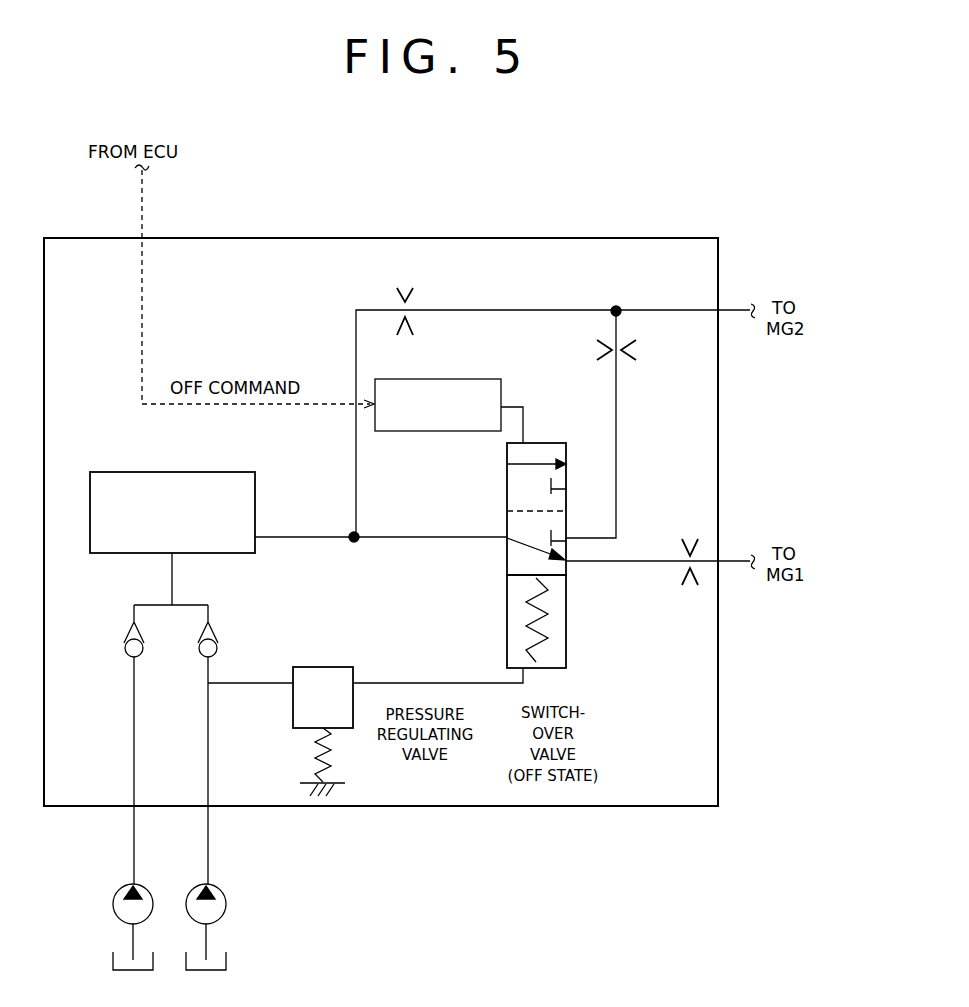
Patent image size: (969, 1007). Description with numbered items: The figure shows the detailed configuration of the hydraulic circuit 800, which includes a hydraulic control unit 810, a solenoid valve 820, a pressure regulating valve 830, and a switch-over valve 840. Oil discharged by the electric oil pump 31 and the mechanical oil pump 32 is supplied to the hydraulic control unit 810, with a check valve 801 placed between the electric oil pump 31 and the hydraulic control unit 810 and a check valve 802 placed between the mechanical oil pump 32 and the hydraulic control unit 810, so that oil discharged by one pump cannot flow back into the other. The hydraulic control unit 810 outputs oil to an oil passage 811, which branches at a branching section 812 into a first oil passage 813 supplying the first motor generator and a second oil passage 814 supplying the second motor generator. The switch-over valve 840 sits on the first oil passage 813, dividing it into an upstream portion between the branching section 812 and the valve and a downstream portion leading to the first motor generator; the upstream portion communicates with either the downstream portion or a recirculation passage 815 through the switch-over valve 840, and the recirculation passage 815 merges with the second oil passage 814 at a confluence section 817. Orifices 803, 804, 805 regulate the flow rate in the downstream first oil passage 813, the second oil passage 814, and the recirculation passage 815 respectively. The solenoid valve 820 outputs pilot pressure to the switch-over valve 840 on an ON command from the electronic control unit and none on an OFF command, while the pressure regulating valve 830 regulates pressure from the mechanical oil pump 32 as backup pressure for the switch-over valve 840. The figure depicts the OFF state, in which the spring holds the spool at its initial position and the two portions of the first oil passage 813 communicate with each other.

The hydraulic circuit 800 is at (362, 238).
The check valve 801 is at (123, 634).
The check valve 802 is at (220, 632).
The orifice 803 is at (428, 300).
The orifice 804 is at (628, 362).
The orifice 805 is at (690, 590).
The hydraulic control unit 810 is at (205, 472).
The oil passage 811 is at (296, 532).
The branching section 812 is at (355, 542).
The first oil passage 813 is at (411, 535).
The second oil passage 814 is at (357, 471).
The recirculation passage 815 is at (617, 472).
The confluence section 817 is at (616, 300).
The solenoid valve 820 is at (417, 379).
The pressure regulating valve 830 is at (325, 667).
The switch-over valve 840 is at (507, 597).
The EOP 31 is at (112, 905).
The MOP 32 is at (226, 905).